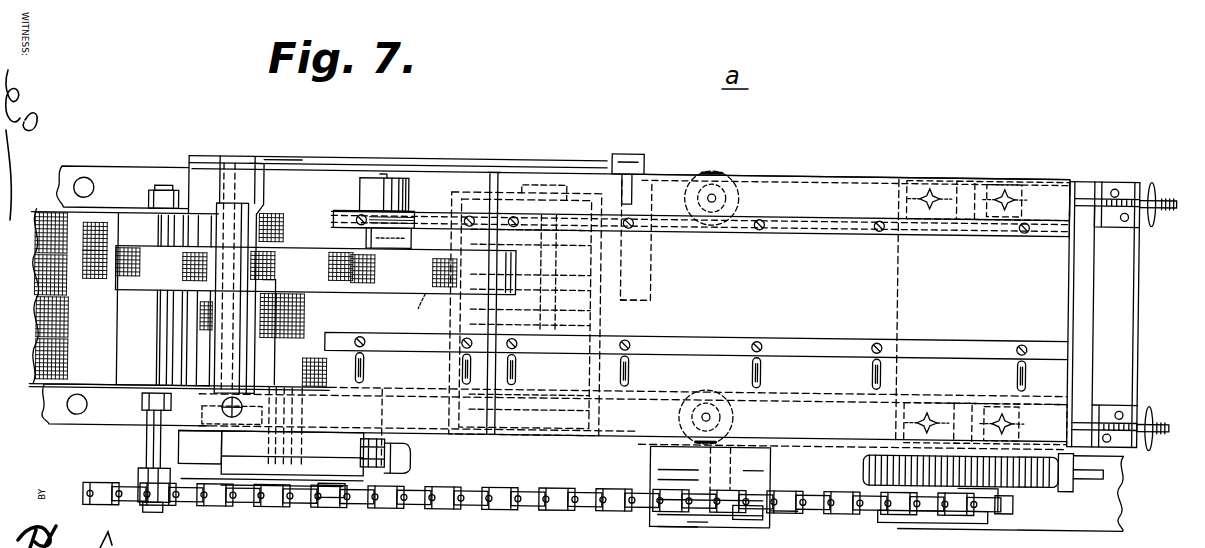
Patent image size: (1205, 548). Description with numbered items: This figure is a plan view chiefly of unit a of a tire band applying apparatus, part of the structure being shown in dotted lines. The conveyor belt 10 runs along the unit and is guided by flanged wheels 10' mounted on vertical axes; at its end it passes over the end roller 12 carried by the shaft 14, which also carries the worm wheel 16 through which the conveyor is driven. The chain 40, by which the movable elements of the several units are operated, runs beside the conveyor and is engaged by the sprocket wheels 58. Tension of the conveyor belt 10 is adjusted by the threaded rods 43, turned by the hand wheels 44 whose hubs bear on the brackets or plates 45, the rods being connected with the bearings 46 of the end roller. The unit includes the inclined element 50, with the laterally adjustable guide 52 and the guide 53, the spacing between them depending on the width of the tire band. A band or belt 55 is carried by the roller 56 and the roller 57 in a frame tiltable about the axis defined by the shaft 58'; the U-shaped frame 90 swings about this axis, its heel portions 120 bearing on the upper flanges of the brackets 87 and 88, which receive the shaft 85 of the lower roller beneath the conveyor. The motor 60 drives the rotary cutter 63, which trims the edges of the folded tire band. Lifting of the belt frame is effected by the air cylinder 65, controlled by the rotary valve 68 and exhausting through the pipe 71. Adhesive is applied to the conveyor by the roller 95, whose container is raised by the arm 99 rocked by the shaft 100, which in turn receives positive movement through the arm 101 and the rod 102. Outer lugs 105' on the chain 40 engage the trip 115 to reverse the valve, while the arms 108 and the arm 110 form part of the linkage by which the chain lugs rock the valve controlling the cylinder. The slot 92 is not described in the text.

The conveyor belt 10 is at (35, 295).
The flanged wheels 10' is at (732, 297).
The end roller 12 is at (896, 290).
The shaft 14 is at (960, 512).
The worm wheel 16 is at (865, 457).
The chain 40 is at (570, 508).
The threaded rods 43 is at (1098, 180).
The wheels 44 is at (1152, 172).
The brackets or plates 45 is at (1125, 212).
The bearings 46 is at (1000, 181).
The inclined element 50 is at (850, 181).
The guide 52 is at (797, 332).
The guide 53 is at (782, 227).
The band or belt 55 is at (315, 270).
The roller 56 is at (415, 310).
The roller 57 is at (120, 332).
The sprocket wheel 58 is at (125, 460).
The shaft 58' is at (132, 401).
The motor 60 is at (405, 180).
The rotary cutter 63 is at (425, 228).
The cylinder 65 is at (400, 452).
The rotary valve 68 is at (318, 518).
The pipe 71 is at (405, 474).
The shaft 85 is at (162, 187).
The vertical stationary brackets 87 is at (88, 217).
The bracket 88 is at (98, 179).
The U-shaped frame 90 is at (240, 354).
The slot 92 is at (455, 372).
The roller 95 is at (540, 351).
The arm 99 is at (560, 182).
The shaft 100 is at (650, 296).
The arm 101 is at (622, 150).
The rod 102 is at (468, 156).
The outer lug 105' is at (757, 526).
The arms 108 is at (710, 475).
The arm 110 is at (680, 522).
The trip 115 is at (782, 513).
The heel portions 120 is at (100, 205).